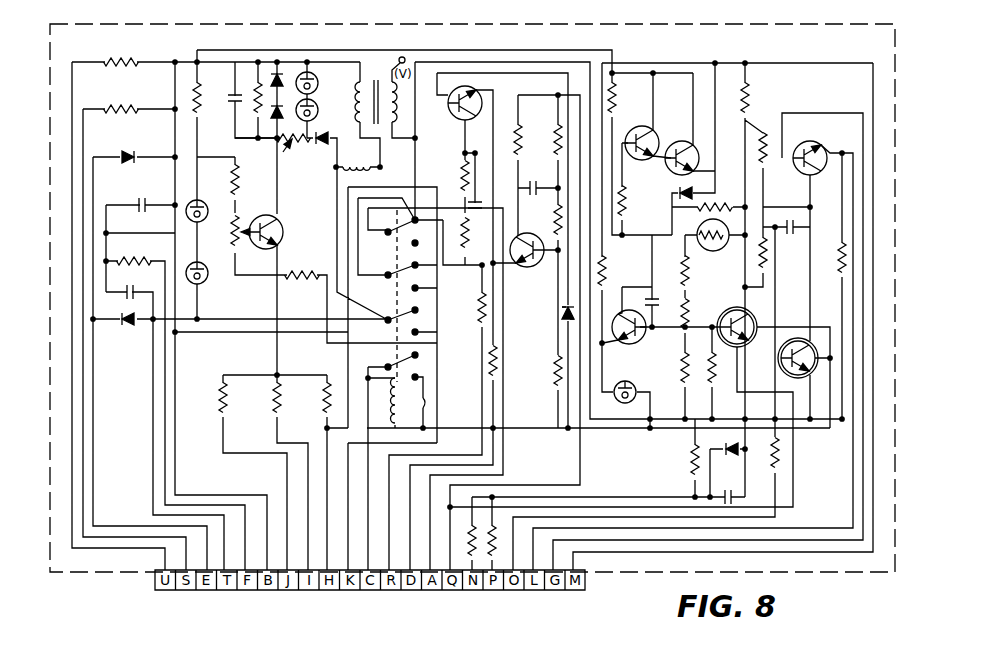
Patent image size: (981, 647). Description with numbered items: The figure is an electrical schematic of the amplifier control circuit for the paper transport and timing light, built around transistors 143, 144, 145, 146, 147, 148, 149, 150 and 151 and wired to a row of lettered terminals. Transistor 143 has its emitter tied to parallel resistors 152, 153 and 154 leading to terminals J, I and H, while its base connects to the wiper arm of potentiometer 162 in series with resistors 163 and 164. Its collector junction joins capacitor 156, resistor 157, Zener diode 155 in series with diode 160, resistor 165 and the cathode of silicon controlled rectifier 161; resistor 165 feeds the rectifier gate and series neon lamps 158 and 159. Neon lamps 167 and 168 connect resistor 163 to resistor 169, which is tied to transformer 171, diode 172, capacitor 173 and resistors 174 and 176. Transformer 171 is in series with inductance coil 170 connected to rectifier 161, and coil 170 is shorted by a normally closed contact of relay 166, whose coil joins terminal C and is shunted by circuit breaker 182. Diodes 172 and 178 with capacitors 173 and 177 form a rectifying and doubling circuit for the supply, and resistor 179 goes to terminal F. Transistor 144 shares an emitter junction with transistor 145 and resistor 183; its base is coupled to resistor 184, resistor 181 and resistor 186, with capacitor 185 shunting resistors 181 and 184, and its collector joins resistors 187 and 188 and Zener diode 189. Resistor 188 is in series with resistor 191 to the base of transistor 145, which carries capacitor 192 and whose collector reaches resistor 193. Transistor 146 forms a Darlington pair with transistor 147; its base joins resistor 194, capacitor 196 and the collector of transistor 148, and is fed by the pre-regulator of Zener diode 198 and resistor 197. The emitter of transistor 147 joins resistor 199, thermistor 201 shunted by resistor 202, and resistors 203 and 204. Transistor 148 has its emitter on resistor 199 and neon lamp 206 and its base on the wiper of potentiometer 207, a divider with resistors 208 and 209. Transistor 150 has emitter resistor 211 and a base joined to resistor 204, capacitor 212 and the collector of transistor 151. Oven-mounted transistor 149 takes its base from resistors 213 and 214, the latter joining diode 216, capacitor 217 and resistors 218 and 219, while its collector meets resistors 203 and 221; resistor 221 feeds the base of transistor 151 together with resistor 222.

The transistor 143 is at (283, 222).
The transistor 144 is at (477, 92).
The transistor 145 is at (540, 264).
The transistor 146 is at (630, 135).
The transistor 147 is at (688, 142).
The transistor 148 is at (622, 344).
The transistor 149 is at (750, 316).
The transistor 150 is at (800, 146).
The transistor 151 is at (782, 374).
The resistor 152 is at (218, 400).
The resistor 153 is at (272, 400).
The resistor 154 is at (323, 400).
The Zener diode 155 is at (255, 142).
The capacitor 156 is at (230, 96).
The resistor 157 is at (255, 82).
The neon lamp 158 is at (318, 83).
The neon lamp 159 is at (318, 110).
The diode 160 is at (282, 78).
The silicon controlled rectifier 161 is at (320, 146).
The potentiometer 162 is at (244, 222).
The resistor 163 is at (240, 180).
The resistor 164 is at (292, 272).
The resistor 165 is at (293, 146).
The relay 166 is at (390, 412).
The neon lamp 167 is at (204, 280).
The neon lamp 168 is at (186, 218).
The resistor 169 is at (200, 112).
The inductance coil 170 is at (358, 156).
The transformer 171 is at (380, 128).
The diode 172 is at (126, 150).
The capacitor 173 is at (140, 198).
The resistor 174 is at (115, 58).
The resistor 176 is at (115, 105).
The capacitor 177 is at (132, 287).
The diode 178 is at (130, 328).
The resistor 179 is at (122, 258).
The resistor 181 is at (466, 256).
The circuit breaker 182 is at (427, 403).
The resistor 183 is at (488, 363).
The resistor 184 is at (460, 178).
The capacitor 185 is at (483, 205).
The resistor 186 is at (477, 310).
The resistor 187 is at (554, 142).
The resistor 188 is at (554, 236).
The Zener diode 189 is at (560, 314).
The resistor 191 is at (553, 372).
The capacitor 192 is at (533, 182).
The resistor 193 is at (522, 130).
The resistor 194 is at (627, 220).
The capacitor 196 is at (656, 312).
The resistor 197 is at (617, 96).
The Zener diode 198 is at (680, 190).
The resistor 199 is at (606, 273).
The thermistor 201 is at (714, 251).
The resistor 202 is at (726, 206).
The resistor 203 is at (750, 92).
The resistor 204 is at (766, 130).
The neon lamp 206 is at (628, 403).
The potentiometer 207 is at (688, 318).
The resistor 208 is at (690, 272).
The resistor 209 is at (680, 376).
The resistor 211 is at (838, 262).
The capacitor 212 is at (792, 234).
The resistor 213 is at (714, 385).
The resistor 214 is at (690, 462).
The diode 216 is at (738, 455).
The capacitor 217 is at (733, 492).
The resistor 218 is at (494, 525).
The resistor 219 is at (473, 525).
The resistor 221 is at (768, 262).
The resistor 222 is at (780, 455).